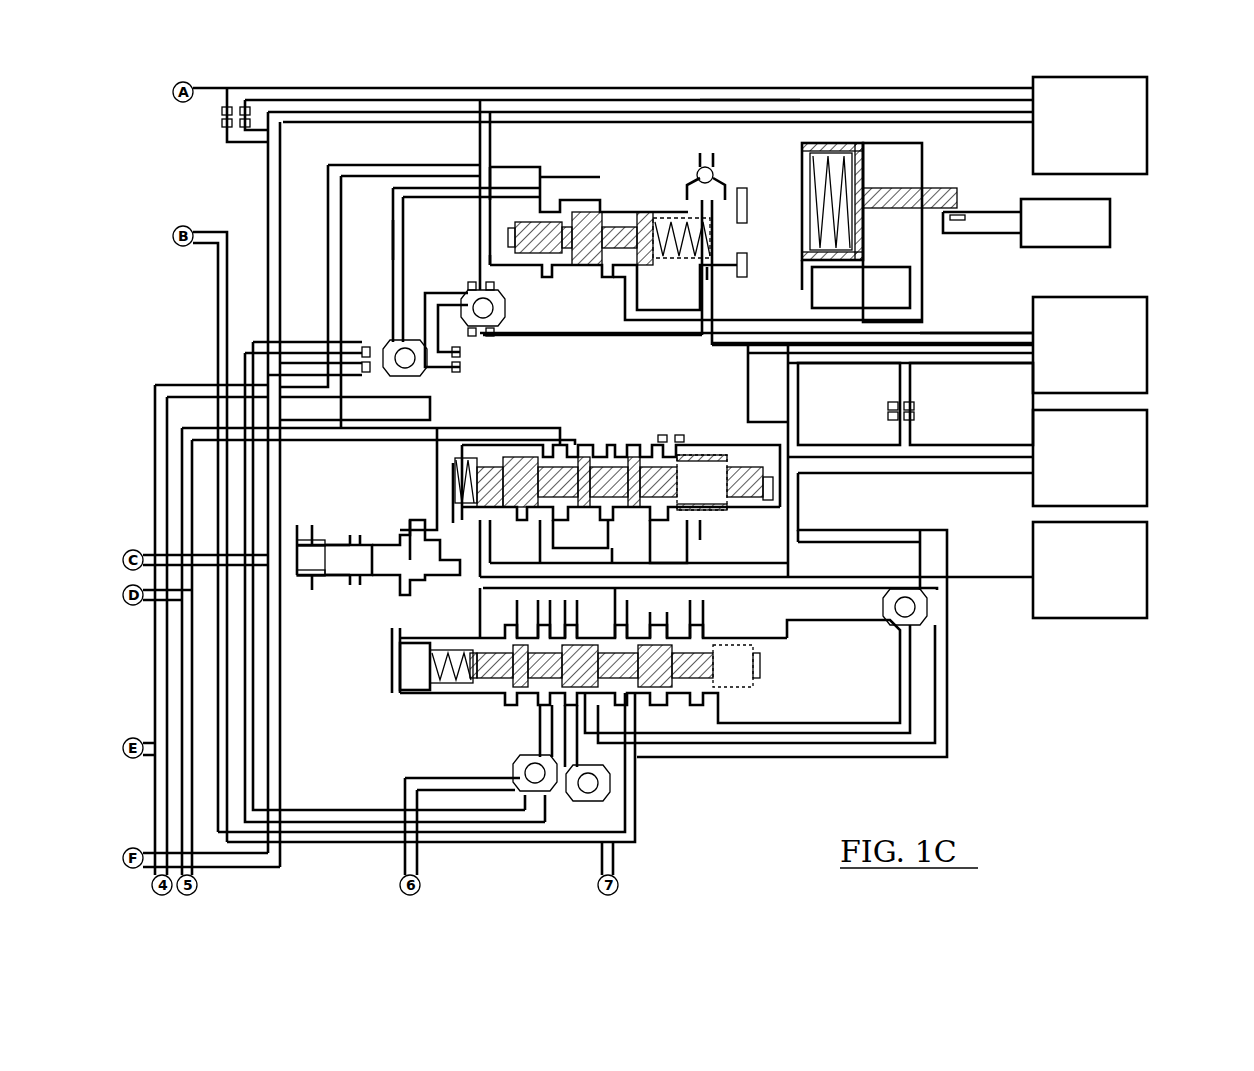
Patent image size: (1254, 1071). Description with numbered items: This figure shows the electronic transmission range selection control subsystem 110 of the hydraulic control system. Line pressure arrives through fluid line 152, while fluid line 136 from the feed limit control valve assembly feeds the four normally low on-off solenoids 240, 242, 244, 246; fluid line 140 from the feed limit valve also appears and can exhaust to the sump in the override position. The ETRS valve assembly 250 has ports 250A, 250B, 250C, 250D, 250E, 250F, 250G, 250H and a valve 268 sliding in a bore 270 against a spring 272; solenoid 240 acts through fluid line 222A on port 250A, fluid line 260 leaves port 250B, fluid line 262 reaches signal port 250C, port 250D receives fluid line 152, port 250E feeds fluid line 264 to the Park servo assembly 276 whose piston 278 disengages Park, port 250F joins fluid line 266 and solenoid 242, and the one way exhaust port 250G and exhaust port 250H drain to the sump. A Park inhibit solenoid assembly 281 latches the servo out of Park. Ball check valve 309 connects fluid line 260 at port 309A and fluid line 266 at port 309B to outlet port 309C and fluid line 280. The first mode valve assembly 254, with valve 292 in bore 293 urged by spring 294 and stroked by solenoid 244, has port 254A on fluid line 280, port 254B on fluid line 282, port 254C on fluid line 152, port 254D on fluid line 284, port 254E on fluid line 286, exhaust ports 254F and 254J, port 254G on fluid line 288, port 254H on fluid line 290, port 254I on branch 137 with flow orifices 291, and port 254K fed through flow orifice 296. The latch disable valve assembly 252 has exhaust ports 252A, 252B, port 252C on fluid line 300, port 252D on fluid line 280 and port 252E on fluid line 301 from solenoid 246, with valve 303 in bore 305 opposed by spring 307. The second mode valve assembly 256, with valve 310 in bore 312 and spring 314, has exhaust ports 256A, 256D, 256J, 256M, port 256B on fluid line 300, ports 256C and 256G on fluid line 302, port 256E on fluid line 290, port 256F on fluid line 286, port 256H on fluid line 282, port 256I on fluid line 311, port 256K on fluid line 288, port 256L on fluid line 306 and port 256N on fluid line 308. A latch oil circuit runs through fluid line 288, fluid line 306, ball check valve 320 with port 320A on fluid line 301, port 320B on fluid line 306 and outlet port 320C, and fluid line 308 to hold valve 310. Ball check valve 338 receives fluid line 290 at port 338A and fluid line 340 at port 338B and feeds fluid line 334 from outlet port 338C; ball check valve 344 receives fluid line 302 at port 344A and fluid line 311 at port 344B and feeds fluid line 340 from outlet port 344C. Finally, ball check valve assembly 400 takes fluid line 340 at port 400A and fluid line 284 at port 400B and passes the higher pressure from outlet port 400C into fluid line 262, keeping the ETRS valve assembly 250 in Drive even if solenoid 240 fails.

The electronic transmission range selection (ETRS) control subsystem 110 is at (1145, 212).
The fluid line 136 is at (950, 122).
The branch 137 is at (850, 440).
The fluid line 140 is at (200, 880).
The fluid line 152 is at (370, 165).
The fluid line 222A is at (745, 100).
The solenoid 240 is at (1147, 140).
The solenoid 242 is at (1147, 353).
The solenoid 244 is at (1147, 465).
The solenoid 246 is at (1147, 580).
The ETRS valve assembly 250 is at (720, 236).
The port 250A is at (492, 225).
The port 250B is at (492, 245).
The port 250C is at (548, 205).
The port 250D is at (610, 205).
The port 250E is at (630, 280).
The port 250F is at (712, 270).
The one way exhaust port 250G is at (716, 178).
The exhaust port 250H is at (690, 220).
The latch disable valve assembly 252 is at (343, 580).
The exhaust port 252A is at (300, 540).
The exhaust port 252B is at (388, 540).
The port 252C is at (410, 580).
The port 252D is at (442, 548).
The port 252E is at (520, 590).
The first mode valve assembly 254 is at (668, 398).
The port 254A is at (480, 462).
The port 254B is at (553, 520).
The port 254C is at (560, 445).
The port 254D is at (622, 452).
The port 254E is at (580, 563).
The exhaust port 254F is at (635, 452).
The port 254G is at (710, 530).
The port 254H is at (757, 510).
The port 254I is at (770, 470).
The exhaust port 254J is at (515, 450).
The port 254K is at (670, 445).
The second mode valve assembly 256 is at (808, 683).
The exhaust port 256A is at (393, 690).
The port 256B is at (410, 660).
The port 256C is at (485, 693).
The exhaust port 256D is at (520, 690).
The port 256E is at (545, 700).
The port 256F is at (585, 638).
The port 256G is at (580, 700).
The port 256H is at (645, 640).
The port 256I is at (630, 700).
The exhaust port 256J is at (645, 690).
The port 256K is at (705, 640).
The port 256L is at (700, 700).
The exhaust port 256M is at (755, 650).
The port 256N is at (760, 635).
The fluid line 260 is at (492, 260).
The fluid line 262 is at (392, 235).
The fluid line 264 is at (830, 308).
The fluid line 266 is at (978, 333).
The valve 268 is at (588, 210).
The bore 270 is at (492, 175).
The spring 272 is at (700, 258).
The Park servo assembly 276 is at (922, 178).
The piston 278 is at (860, 235).
The fluid line 280 is at (430, 340).
The Park inhibit solenoid assembly 281 is at (1110, 240).
The fluid line 282 is at (690, 520).
The fluid line 284 is at (595, 452).
The fluid line 286 is at (530, 638).
The fluid line 288 is at (700, 595).
The fluid line 290 is at (950, 712).
The flow orifices 291 is at (888, 410).
The valve 292 is at (718, 492).
The bore 293 is at (720, 445).
The spring 294 is at (458, 478).
The flow orifice 296 is at (662, 435).
The fluid line 300 is at (346, 651).
The fluid line 301 is at (985, 590).
The fluid line 302 is at (625, 770).
The valve 303 is at (372, 571).
The bore 305 is at (418, 545).
The fluid line 306 is at (808, 722).
The spring 307 is at (295, 580).
The fluid line 308 is at (858, 625).
The ball check valve 309 is at (495, 312).
The port 309A is at (500, 295).
The port 309B is at (487, 338).
The outlet port 309C is at (425, 345).
The valve 310 is at (750, 674).
The fluid line 311 is at (330, 842).
The bore 312 is at (745, 690).
The spring 314 is at (480, 690).
The ball check valve 320 is at (925, 622).
The port 320A is at (915, 595).
The port 320B is at (912, 640).
The outlet port 320C is at (875, 625).
The fluid line 334 is at (405, 778).
The ball check valve 338 is at (518, 805).
The port 338A is at (530, 757).
The port 338B is at (525, 800).
The outlet port 338C is at (515, 778).
The fluid line 340 is at (618, 875).
The ball check valve 344 is at (607, 797).
The port 344A is at (570, 770).
The port 344B is at (612, 795).
The outlet port 344C is at (620, 830).
The ball check valve assembly 400 is at (380, 345).
The port 400A is at (392, 378).
The port 400B is at (400, 370).
The outlet port 400C is at (360, 350).